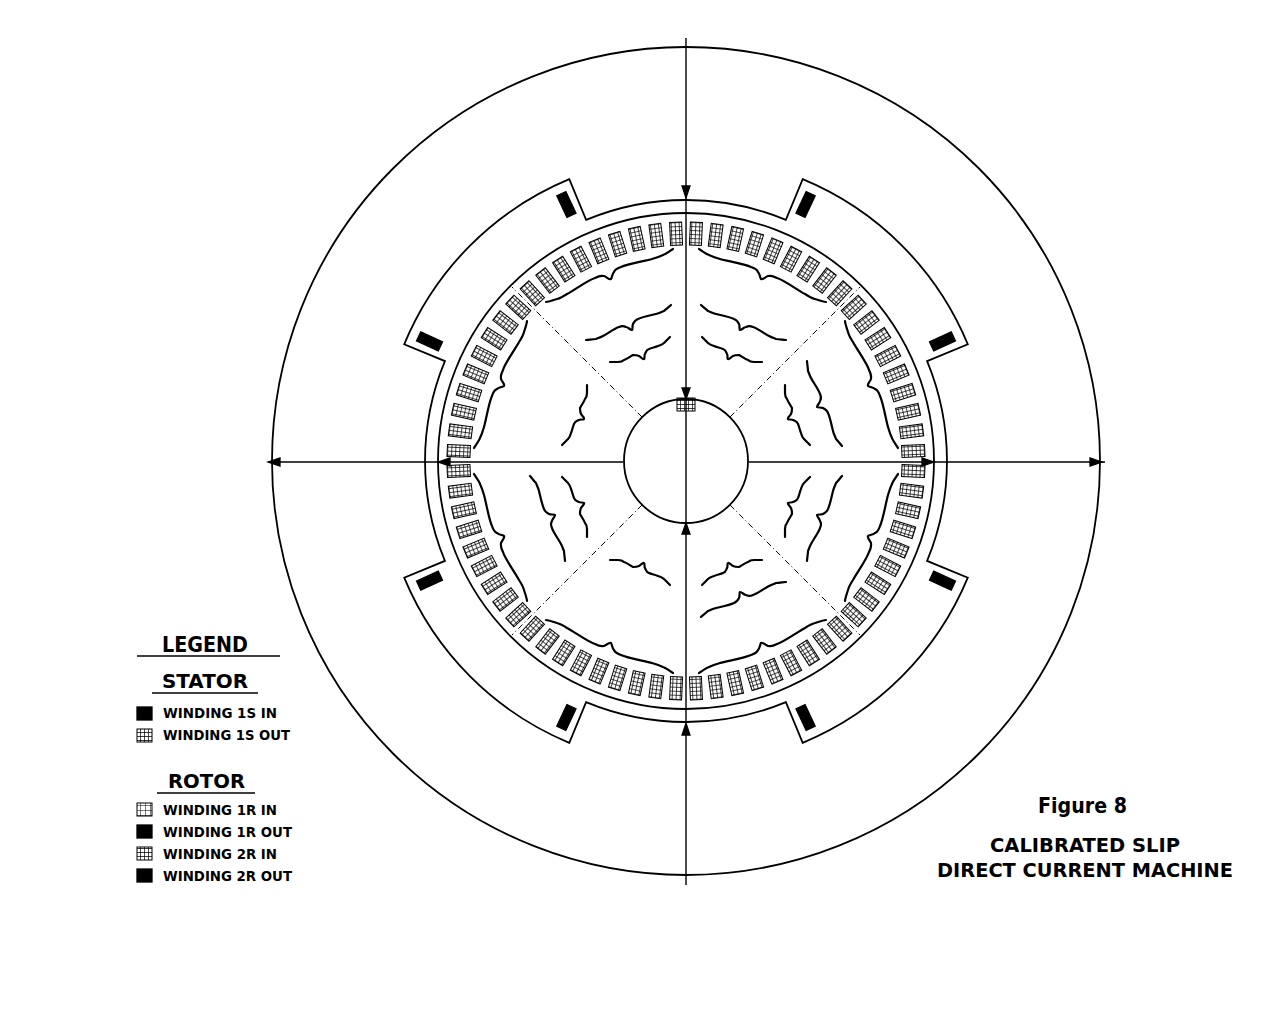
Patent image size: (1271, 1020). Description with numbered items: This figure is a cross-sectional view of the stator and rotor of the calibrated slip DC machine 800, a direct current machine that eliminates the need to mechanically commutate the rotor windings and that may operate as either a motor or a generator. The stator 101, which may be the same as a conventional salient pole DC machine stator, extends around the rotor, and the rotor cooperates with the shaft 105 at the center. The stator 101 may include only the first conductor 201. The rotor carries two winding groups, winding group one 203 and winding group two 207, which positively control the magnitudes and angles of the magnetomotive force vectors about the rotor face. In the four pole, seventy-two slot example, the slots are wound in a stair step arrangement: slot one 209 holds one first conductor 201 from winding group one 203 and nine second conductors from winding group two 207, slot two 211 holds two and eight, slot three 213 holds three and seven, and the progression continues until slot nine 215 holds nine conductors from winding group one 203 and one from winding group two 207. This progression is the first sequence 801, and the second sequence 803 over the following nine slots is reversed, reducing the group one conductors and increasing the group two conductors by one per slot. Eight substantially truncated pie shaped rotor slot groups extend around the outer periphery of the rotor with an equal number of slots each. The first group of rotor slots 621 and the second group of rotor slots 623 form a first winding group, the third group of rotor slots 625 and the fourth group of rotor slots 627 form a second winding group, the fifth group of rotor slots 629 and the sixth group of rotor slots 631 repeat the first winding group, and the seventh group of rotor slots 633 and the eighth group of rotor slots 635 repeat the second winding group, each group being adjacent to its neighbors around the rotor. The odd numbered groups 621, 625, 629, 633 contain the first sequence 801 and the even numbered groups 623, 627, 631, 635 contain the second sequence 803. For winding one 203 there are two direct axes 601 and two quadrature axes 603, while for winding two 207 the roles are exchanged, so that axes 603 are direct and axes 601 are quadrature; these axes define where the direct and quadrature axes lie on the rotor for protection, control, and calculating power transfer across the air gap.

The calibrated slip DC machine 800 is at (1038, 110).
The stator 101 is at (1015, 213).
The shaft 105 is at (750, 487).
The first conductor 201 is at (432, 575).
The winding group one 203 is at (738, 225).
The winding group two 207 is at (775, 245).
The slot one 209 is at (694, 222).
The slot two 211 is at (717, 225).
The slot three 213 is at (762, 240).
The slot nine 215 is at (833, 307).
The direct axes 601 is at (688, 298).
The quadrature axes 603 is at (721, 433).
The first group of rotor slots 621 is at (732, 358).
The second group of rotor slots 623 is at (816, 408).
The third group of rotor slots 625 is at (868, 482).
The fourth group of rotor slots 627 is at (732, 556).
The fifth group of rotor slots 629 is at (643, 557).
The sixth group of rotor slots 631 is at (553, 508).
The seventh group of rotor slots 633 is at (576, 412).
The eighth group of rotor slots 635 is at (684, 378).
The first sequence in stair step arrangement 801 is at (686, 461).
The second sequence in stair step arrangement 803 is at (686, 461).